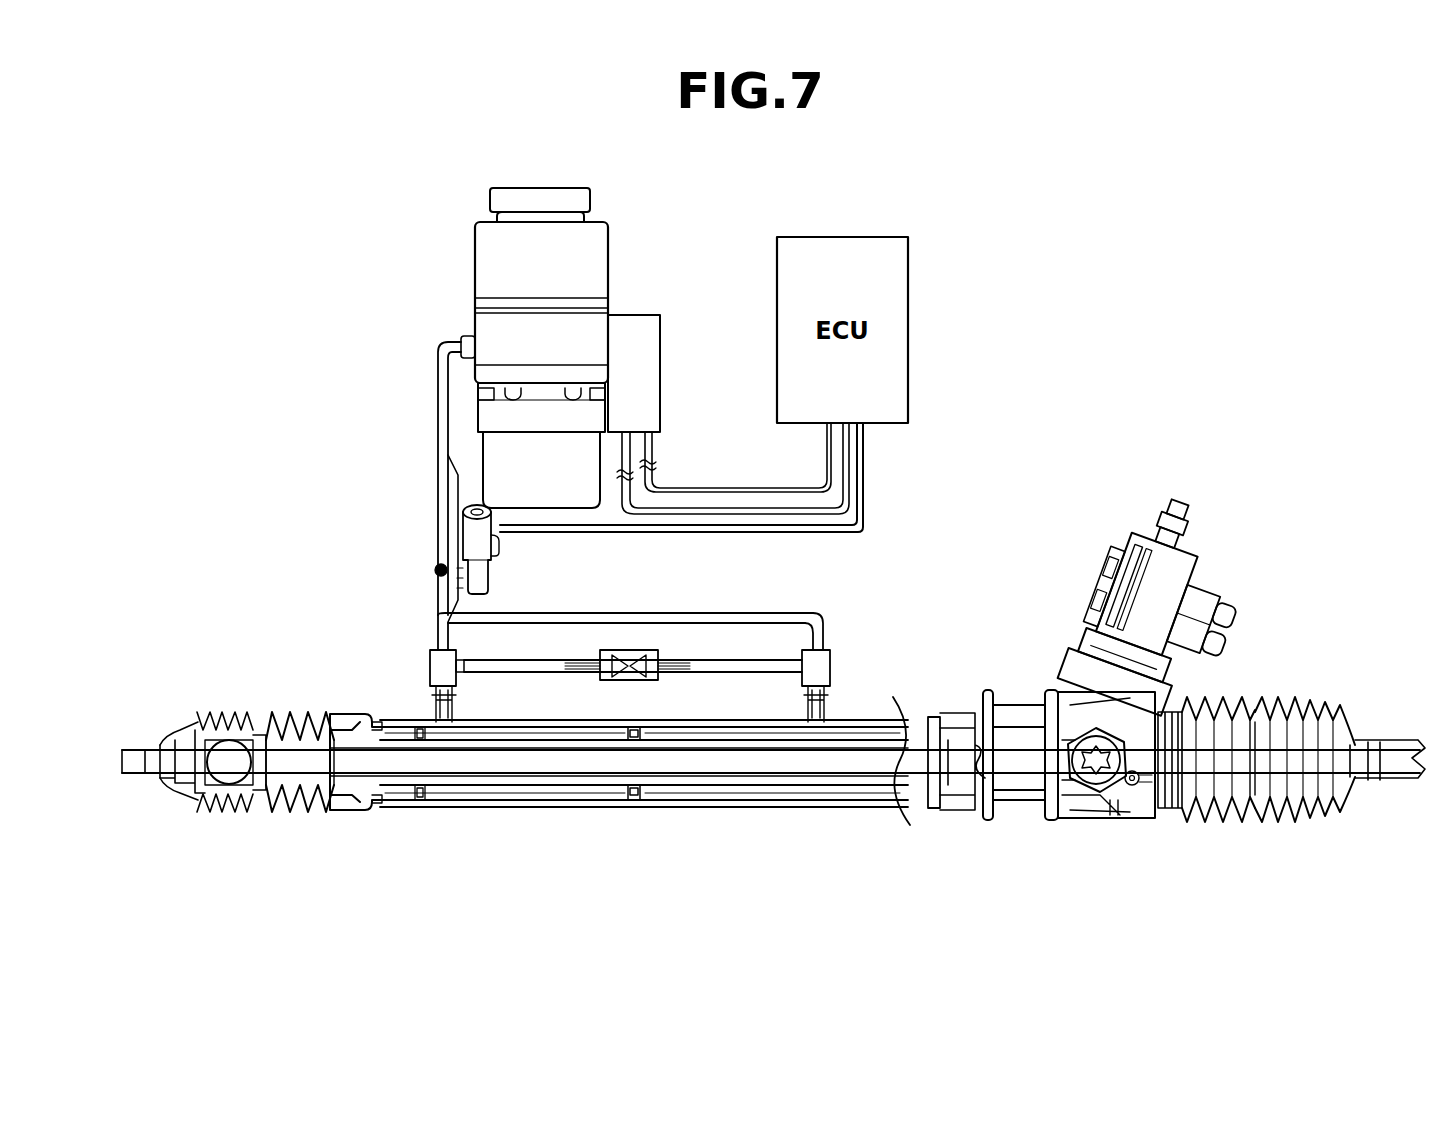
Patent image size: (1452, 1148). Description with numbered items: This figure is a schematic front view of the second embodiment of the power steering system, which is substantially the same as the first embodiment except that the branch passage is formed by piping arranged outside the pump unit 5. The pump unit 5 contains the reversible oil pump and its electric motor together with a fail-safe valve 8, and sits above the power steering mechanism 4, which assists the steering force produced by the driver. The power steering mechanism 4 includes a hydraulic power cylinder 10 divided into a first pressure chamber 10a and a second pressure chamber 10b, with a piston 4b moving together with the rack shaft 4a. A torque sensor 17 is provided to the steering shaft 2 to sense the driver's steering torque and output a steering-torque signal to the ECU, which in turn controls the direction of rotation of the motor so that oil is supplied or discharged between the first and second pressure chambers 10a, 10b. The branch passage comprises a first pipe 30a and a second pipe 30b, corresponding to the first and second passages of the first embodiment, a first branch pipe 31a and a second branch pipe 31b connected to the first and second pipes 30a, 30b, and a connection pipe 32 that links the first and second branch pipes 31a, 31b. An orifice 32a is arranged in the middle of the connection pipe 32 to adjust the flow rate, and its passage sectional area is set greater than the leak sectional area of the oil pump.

The steering shaft 2 is at (1093, 772).
The power steering mechanism 4 is at (330, 705).
The rack shaft 4a is at (303, 803).
The piston 4b is at (633, 800).
The pump unit 5 is at (475, 278).
The fail-safe valve 8 is at (475, 545).
The hydraulic power cylinder 10 is at (838, 806).
The first pressure chamber 10a is at (527, 800).
The second pressure chamber 10b is at (762, 800).
The torque sensor 17 is at (1115, 565).
The first pipe 30a is at (437, 630).
The second pipe 30b is at (823, 630).
The first branch pipe 31a is at (440, 668).
The second branch pipe 31b is at (832, 667).
The connection pipe 32 is at (762, 648).
The orifice 32a is at (630, 655).